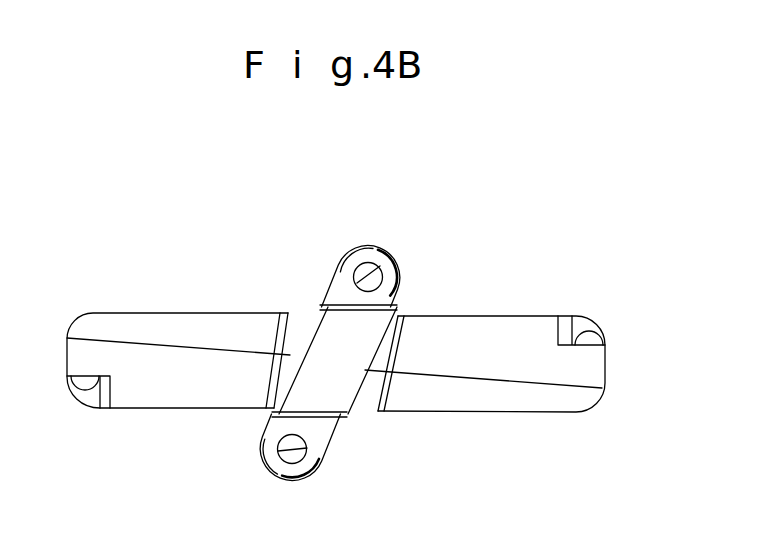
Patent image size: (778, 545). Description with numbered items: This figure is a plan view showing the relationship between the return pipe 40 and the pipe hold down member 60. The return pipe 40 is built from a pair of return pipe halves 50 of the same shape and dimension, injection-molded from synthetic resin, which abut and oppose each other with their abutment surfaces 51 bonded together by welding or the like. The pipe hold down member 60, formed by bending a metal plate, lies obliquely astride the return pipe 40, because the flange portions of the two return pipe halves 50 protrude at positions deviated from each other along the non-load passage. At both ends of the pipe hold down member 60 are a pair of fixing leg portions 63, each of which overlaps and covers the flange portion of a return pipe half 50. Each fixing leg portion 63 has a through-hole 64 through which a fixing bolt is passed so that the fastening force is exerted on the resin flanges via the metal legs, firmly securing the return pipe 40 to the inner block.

The return pipe 40 is at (548, 296).
The return pipe half 50 is at (133, 312).
The abutment surface 51 is at (510, 384).
The pipe hold down member 60 is at (322, 345).
The fixing leg portion 63 is at (392, 272).
The through-hole 64 is at (378, 268).